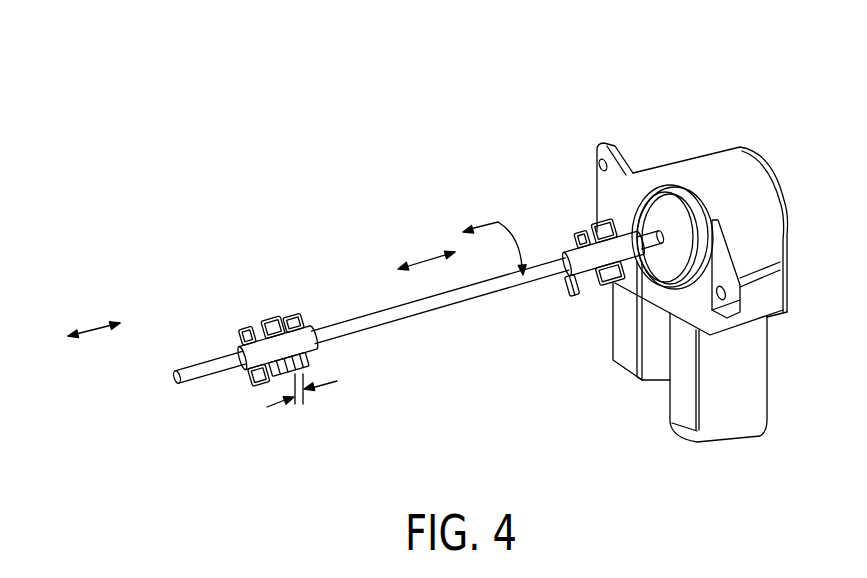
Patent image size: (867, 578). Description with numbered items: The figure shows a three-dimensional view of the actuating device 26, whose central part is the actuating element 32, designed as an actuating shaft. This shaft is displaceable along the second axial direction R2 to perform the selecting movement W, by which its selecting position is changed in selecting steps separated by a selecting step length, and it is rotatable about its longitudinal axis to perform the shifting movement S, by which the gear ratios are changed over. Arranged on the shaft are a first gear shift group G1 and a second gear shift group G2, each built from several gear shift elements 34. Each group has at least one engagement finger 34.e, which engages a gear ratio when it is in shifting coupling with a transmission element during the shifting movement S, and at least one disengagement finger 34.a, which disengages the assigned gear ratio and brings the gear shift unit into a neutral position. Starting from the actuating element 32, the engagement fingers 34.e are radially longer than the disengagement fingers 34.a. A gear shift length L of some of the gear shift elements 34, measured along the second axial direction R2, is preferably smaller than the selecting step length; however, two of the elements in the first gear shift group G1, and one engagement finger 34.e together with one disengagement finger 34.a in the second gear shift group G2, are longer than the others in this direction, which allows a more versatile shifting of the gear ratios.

The actuating device 26 is at (549, 93).
The actuating element 32 is at (385, 293).
The gear shift element 34 is at (247, 333).
The disengagement finger 34.a is at (270, 320).
The engagement finger 34.e is at (263, 390).
The first gear shift group G1 is at (219, 262).
The second gear shift group G2 is at (556, 196).
The gear shift length L is at (270, 407).
The second axial direction R2 is at (90, 331).
The selecting movement W is at (425, 258).
The shifting movement S is at (498, 222).